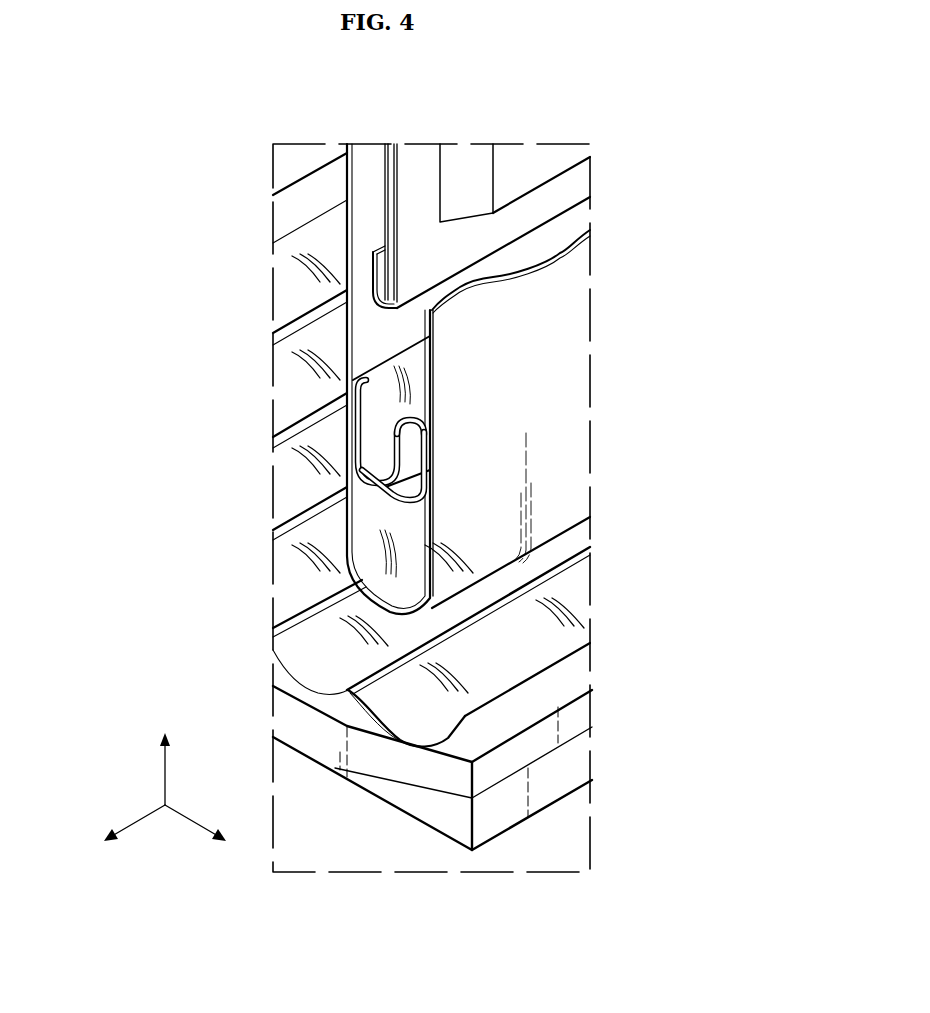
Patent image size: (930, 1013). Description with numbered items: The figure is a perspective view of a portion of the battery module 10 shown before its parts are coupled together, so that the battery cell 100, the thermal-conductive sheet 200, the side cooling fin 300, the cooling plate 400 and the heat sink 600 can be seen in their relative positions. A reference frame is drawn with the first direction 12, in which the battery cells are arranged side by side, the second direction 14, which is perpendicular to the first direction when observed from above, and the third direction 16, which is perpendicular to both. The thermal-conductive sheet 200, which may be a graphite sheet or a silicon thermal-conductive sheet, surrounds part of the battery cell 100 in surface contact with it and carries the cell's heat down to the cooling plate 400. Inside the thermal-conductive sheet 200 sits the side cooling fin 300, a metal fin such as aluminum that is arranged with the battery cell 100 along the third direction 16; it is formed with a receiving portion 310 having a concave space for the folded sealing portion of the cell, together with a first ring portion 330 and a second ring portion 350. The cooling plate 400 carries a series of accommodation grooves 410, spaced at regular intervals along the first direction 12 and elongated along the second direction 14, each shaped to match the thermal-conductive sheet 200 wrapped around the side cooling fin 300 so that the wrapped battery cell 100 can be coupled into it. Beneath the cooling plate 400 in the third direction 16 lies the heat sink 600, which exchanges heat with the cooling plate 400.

The battery module 10 is at (218, 86).
The battery cell 100 is at (509, 158).
The thermal-conductive sheet 200 is at (548, 330).
The side cooling fin 300 is at (336, 427).
The first ring portion 330 is at (352, 398).
The second ring portion 350 is at (421, 420).
The receiving portion 310 is at (378, 488).
The cooling plate 400 is at (608, 666).
The accommodation groove 410 is at (398, 729).
The heat sink 600 is at (358, 797).
The first direction 12 is at (210, 834).
The second direction 14 is at (119, 834).
The third direction 16 is at (164, 755).